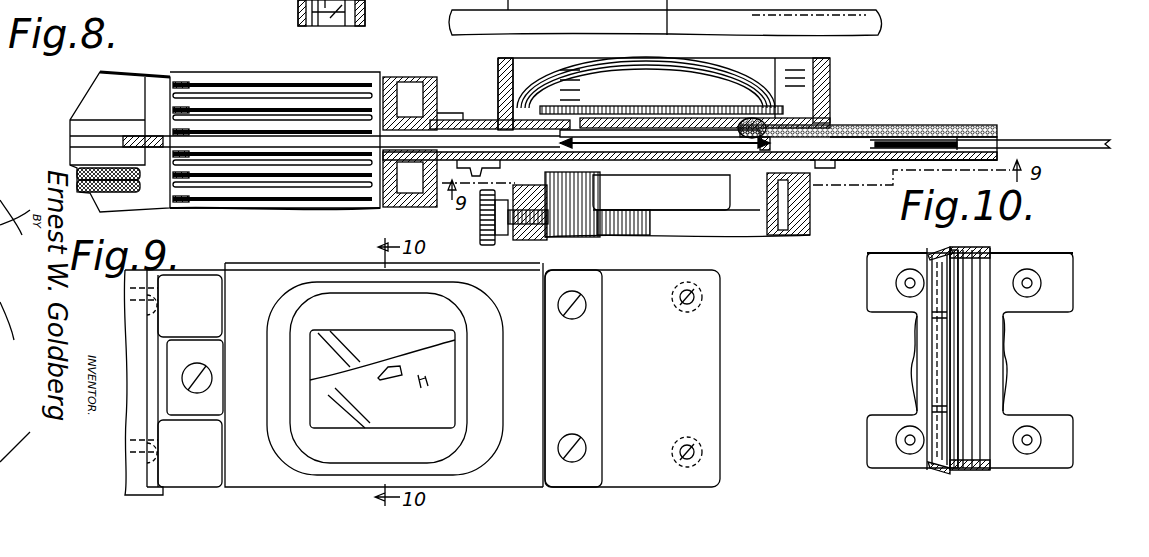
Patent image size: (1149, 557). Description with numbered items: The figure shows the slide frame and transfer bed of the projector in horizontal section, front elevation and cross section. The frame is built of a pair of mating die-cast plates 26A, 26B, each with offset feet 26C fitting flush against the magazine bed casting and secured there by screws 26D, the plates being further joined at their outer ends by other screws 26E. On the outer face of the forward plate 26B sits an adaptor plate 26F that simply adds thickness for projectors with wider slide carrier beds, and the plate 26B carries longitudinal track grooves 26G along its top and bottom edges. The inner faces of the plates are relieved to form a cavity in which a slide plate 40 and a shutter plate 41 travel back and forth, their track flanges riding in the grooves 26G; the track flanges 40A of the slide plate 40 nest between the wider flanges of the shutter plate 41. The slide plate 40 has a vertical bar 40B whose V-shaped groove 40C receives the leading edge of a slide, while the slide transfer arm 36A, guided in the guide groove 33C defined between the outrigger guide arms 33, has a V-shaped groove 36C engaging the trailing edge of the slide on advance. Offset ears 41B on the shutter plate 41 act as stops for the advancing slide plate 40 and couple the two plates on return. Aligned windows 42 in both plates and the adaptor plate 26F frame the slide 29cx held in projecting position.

In FIG. 8, the outrigger guide arm 33 is at (128, 108).
In FIG. 8, the guide groove 33C is at (88, 139).
In FIG. 8, the die-cast plate 26A is at (1003, 127).
In FIG. 8, the forward plate 26B is at (890, 160).
In FIG. 9, the forward plate 26B is at (687, 378).
In FIG. 8, the offset feet 26C is at (437, 97).
In FIG. 9, the offset feet 26C is at (167, 278).
In FIG. 10, the offset feet 26C is at (890, 413).
In FIG. 10, the screws 26D is at (1040, 288).
In FIG. 9, the screws 26E is at (697, 302).
In FIG. 9, the adaptor plate 26F is at (530, 303).
In FIG. 10, the adaptor plate 26F is at (930, 415).
In FIG. 10, the longitudinal track grooves 26G is at (963, 252).
In FIG. 8, the slide 29cx is at (660, 143).
In FIG. 9, the slide 29cx is at (440, 366).
In FIG. 8, the slide transfer arm 36A is at (457, 140).
In FIG. 8, the V-shaped groove 36C is at (566, 140).
In FIG. 8, the slide plate 40 is at (855, 128).
In FIG. 8, the track flanges 40A is at (882, 132).
In FIG. 8, the vertical bar 40B is at (770, 147).
In FIG. 8, the V-shaped groove 40C is at (757, 143).
In FIG. 8, the shutter plate 41 is at (757, 90).
In FIG. 8, the offset ears 41B is at (967, 127).
In FIG. 8, the windows 42 is at (627, 135).
In FIG. 9, the windows 42 is at (465, 410).